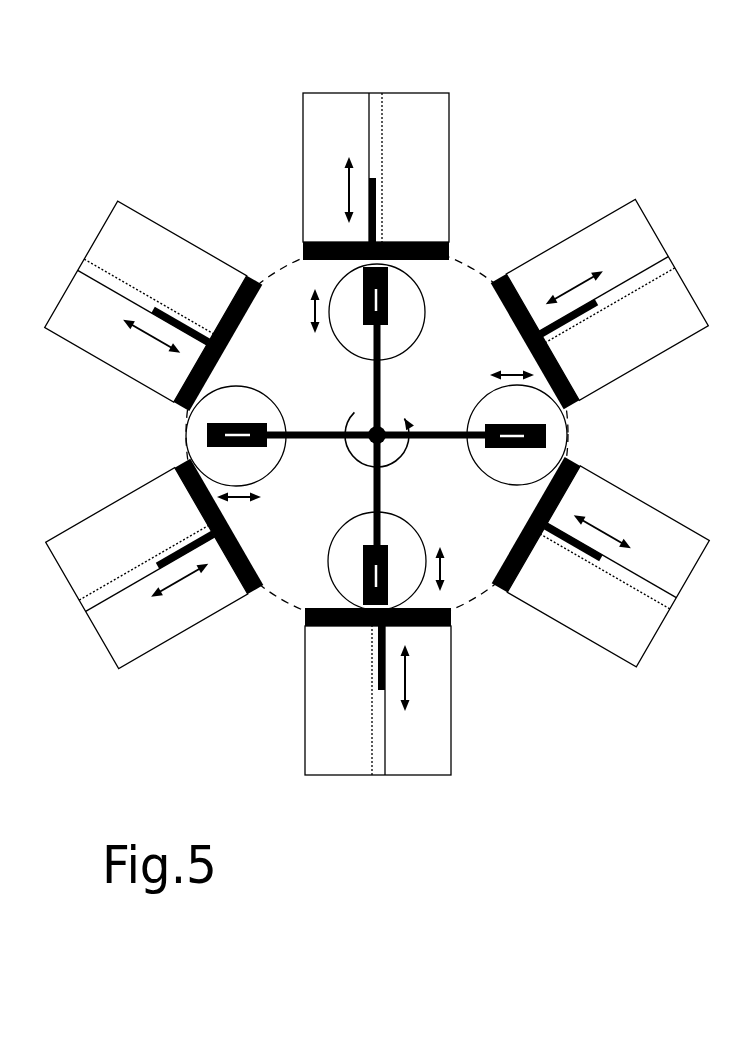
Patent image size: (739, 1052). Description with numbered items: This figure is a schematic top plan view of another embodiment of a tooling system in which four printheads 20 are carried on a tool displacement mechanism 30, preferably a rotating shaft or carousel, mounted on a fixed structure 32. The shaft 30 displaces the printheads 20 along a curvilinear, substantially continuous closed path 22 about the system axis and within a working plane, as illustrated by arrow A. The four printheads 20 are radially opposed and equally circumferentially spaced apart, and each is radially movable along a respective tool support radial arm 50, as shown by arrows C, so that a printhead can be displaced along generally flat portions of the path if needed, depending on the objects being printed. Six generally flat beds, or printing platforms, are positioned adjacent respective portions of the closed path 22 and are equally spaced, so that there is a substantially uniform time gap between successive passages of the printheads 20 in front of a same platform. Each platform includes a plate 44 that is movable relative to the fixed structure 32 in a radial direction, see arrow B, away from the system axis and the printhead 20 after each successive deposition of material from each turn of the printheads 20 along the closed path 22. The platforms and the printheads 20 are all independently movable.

The printhead 20 is at (427, 300).
The closed path 22 is at (278, 266).
The tool displacement mechanism 30 is at (382, 425).
The fixed structure 32 is at (182, 632).
The plate 44 is at (187, 493).
The tool support radial arm 50 is at (303, 438).
The arrow A is at (345, 432).
The arrow B is at (576, 282).
The arrow C is at (312, 312).